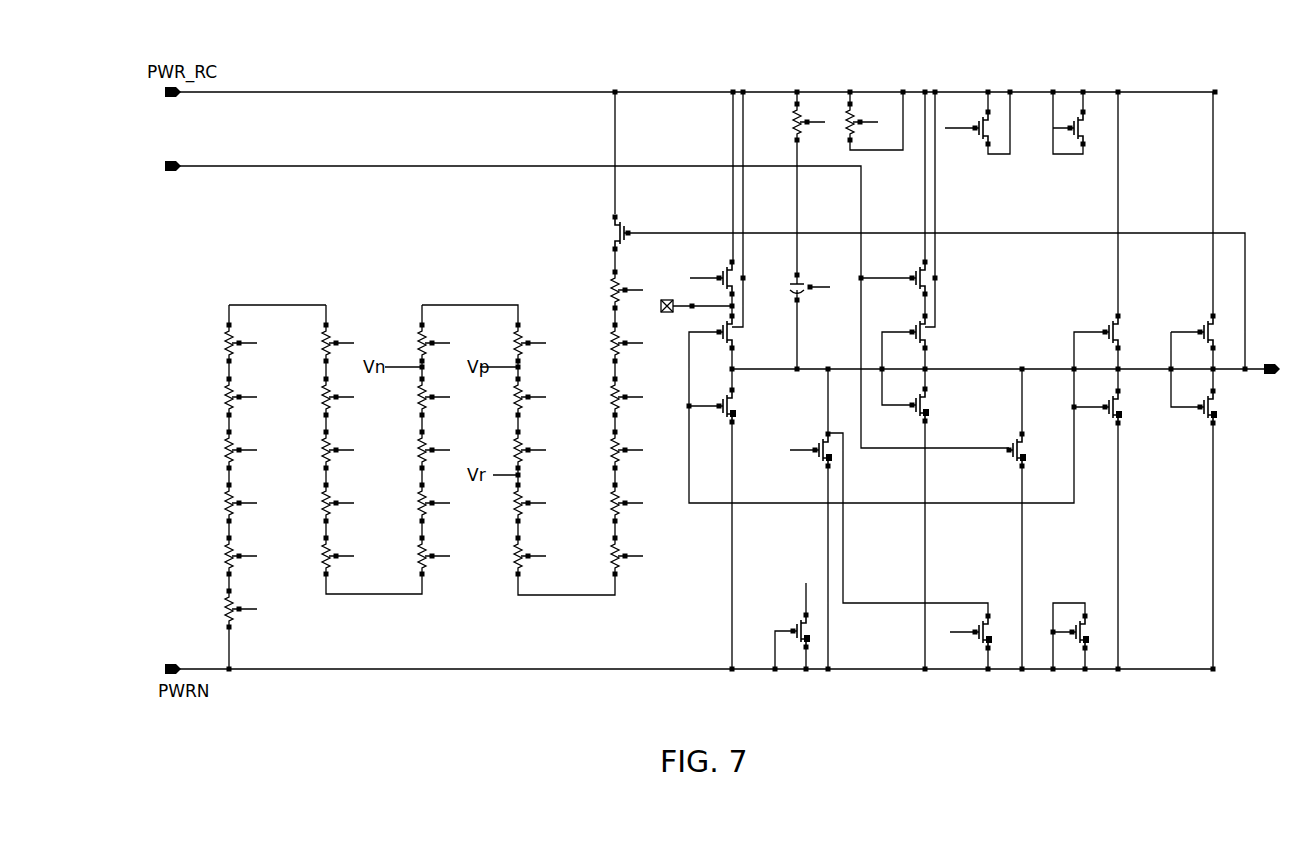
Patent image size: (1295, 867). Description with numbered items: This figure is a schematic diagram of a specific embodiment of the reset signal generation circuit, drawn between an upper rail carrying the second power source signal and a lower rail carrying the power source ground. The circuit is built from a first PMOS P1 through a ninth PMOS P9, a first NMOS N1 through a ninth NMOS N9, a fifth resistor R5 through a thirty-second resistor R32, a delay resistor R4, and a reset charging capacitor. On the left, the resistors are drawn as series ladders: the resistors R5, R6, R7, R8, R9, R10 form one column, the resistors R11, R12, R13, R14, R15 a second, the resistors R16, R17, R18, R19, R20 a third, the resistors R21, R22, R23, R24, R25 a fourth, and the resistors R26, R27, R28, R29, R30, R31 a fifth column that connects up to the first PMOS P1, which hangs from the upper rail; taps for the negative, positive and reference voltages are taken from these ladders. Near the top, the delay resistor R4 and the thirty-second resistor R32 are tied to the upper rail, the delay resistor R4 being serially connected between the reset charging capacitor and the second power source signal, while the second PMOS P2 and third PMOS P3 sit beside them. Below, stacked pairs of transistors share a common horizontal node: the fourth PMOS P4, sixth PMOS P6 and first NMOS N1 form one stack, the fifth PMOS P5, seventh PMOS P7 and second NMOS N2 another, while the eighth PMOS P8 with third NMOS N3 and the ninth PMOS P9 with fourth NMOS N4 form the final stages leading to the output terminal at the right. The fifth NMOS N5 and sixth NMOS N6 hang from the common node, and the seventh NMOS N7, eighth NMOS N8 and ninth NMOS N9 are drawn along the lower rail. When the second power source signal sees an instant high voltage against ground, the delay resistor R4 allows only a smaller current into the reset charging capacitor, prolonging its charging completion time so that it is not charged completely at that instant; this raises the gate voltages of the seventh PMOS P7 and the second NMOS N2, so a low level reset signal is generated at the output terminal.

The delay resistor R4 is at (813, 122).
The fifth resistor R5 is at (228, 609).
The sixth resistor R6 is at (228, 556).
The seventh resistor R7 is at (228, 503).
The eighth resistor R8 is at (228, 450).
The ninth resistor R9 is at (228, 397).
The tenth resistor R10 is at (223, 343).
The eleventh resistor R11 is at (320, 343).
The twelfth resistor R12 is at (320, 397).
The thirteenth resistor R13 is at (320, 450).
The fourteenth resistor R14 is at (320, 503).
The fifteenth resistor R15 is at (320, 556).
The sixteenth resistor R16 is at (416, 556).
The seventeenth resistor R17 is at (416, 503).
The eighteenth resistor R18 is at (416, 450).
The nineteenth resistor R19 is at (416, 397).
The twentieth resistor R20 is at (416, 343).
The twenty-first resistor R21 is at (512, 343).
The twenty-second resistor R22 is at (512, 397).
The twenty-third resistor R23 is at (512, 450).
The twenty-fourth resistor R24 is at (512, 503).
The twenty-fifth resistor R25 is at (512, 556).
The twenty-sixth resistor R26 is at (609, 556).
The twenty-seventh resistor R27 is at (609, 503).
The twenty-eighth resistor R28 is at (609, 450).
The twenty-ninth resistor R29 is at (609, 397).
The thirtieth resistor R30 is at (609, 343).
The thirty-first resistor R31 is at (609, 290).
The thirty-second resistor R32 is at (869, 122).
The first PMOS P1 is at (634, 230).
The second PMOS P2 is at (972, 138).
The third PMOS P3 is at (1091, 128).
The fourth PMOS P4 is at (716, 274).
The fifth PMOS P5 is at (907, 274).
The sixth PMOS P6 is at (716, 331).
The seventh PMOS P7 is at (907, 331).
The eighth PMOS P8 is at (1099, 328).
The ninth PMOS P9 is at (1200, 323).
The first NMOS N1 is at (716, 415).
The second NMOS N2 is at (908, 415).
The third NMOS N3 is at (1099, 416).
The fourth NMOS N4 is at (1193, 416).
The fifth NMOS N5 is at (811, 457).
The sixth NMOS N6 is at (1003, 460).
The seventh NMOS N7 is at (787, 626).
The eighth NMOS N8 is at (995, 630).
The ninth NMOS N9 is at (1092, 630).